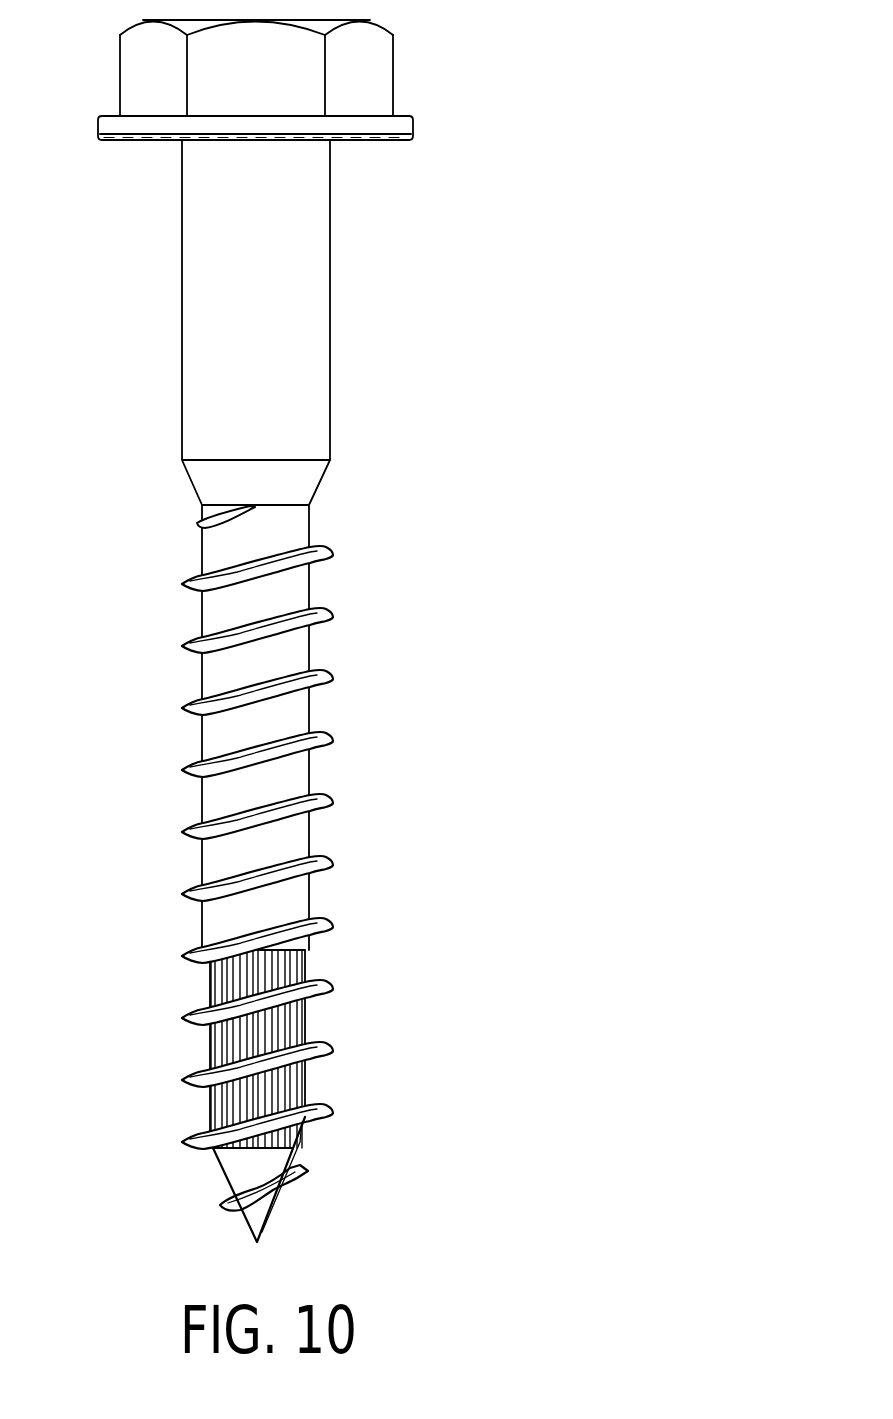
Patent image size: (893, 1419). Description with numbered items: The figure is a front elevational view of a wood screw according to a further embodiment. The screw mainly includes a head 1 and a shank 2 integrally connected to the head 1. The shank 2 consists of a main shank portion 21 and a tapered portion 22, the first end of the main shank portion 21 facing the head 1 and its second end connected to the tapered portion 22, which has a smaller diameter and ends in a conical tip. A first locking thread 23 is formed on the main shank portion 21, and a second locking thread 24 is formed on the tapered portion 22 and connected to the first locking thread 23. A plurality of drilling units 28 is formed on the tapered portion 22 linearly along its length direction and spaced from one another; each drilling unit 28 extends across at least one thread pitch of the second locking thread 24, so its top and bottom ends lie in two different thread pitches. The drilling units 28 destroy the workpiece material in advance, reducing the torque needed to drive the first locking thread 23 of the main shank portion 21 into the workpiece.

The head 1 is at (372, 70).
The shank 2 is at (251, 691).
The main shank portion 21 is at (283, 720).
The tapered portion 22 is at (305, 1025).
The first locking thread 23 is at (192, 708).
The second locking thread 24 is at (203, 1020).
The drilling unit 28 is at (233, 1100).